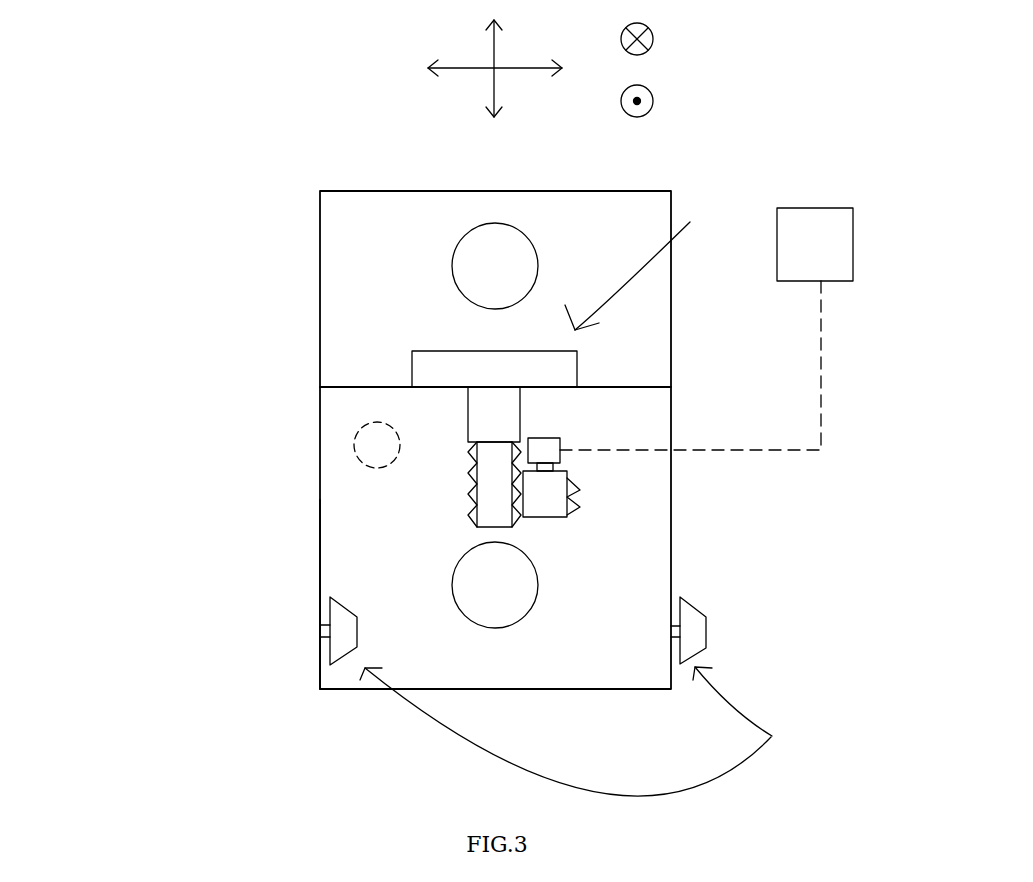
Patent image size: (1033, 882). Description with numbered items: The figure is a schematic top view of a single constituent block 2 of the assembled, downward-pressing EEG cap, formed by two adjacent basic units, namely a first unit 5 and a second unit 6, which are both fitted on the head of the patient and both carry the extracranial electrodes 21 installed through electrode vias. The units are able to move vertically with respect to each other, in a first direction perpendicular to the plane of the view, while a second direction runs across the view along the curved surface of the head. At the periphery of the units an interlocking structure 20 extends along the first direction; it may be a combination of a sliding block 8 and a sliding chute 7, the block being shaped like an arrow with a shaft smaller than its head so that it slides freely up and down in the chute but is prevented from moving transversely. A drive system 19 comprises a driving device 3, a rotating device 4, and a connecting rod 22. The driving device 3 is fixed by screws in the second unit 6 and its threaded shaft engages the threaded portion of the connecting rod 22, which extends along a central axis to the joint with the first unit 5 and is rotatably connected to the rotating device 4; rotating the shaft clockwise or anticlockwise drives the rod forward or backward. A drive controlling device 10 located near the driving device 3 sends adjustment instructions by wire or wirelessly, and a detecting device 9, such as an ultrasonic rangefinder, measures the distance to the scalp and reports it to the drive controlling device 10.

The constituent block 2 is at (488, 471).
The driving device 3 is at (548, 505).
The rotating device 4 is at (490, 368).
The first unit 5 is at (614, 297).
The second unit 6 is at (350, 585).
The sliding chute 7 is at (343, 633).
The sliding block 8 is at (690, 630).
The detecting device 9 is at (377, 448).
The drive controlling device 10 is at (814, 244).
The drive system 19 is at (642, 265).
The interlocking structure 20 is at (582, 731).
The extracranial electrodes 21 is at (495, 266).
The connecting rod 22 is at (492, 497).